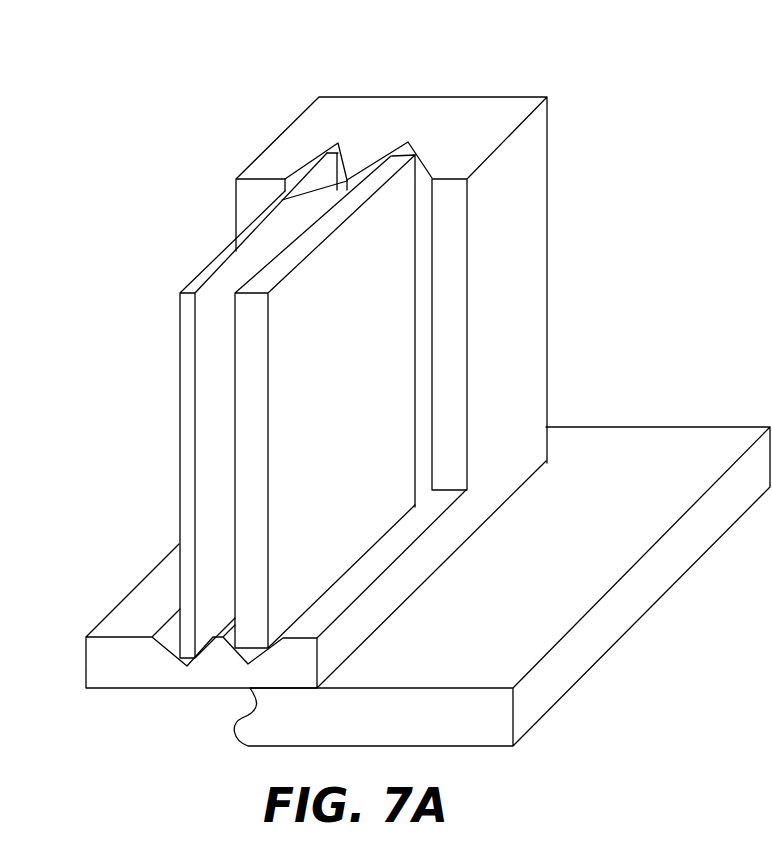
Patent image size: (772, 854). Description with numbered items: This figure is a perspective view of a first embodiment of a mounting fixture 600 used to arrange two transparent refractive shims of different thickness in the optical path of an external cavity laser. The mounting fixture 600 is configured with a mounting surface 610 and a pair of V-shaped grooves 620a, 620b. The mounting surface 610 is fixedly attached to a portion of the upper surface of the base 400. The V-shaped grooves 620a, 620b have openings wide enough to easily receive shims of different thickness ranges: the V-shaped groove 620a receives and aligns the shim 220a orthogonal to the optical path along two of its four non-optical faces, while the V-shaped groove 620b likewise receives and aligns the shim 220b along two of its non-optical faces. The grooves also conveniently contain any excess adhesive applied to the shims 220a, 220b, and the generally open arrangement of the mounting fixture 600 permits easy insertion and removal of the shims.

The mounting fixture 600 is at (525, 332).
The V-shaped groove 620a is at (345, 141).
The V-shaped groove 620b is at (418, 141).
The shim 220a is at (173, 326).
The shim 220b is at (349, 498).
The mounting surface 610 is at (190, 696).
The base 400 is at (672, 433).